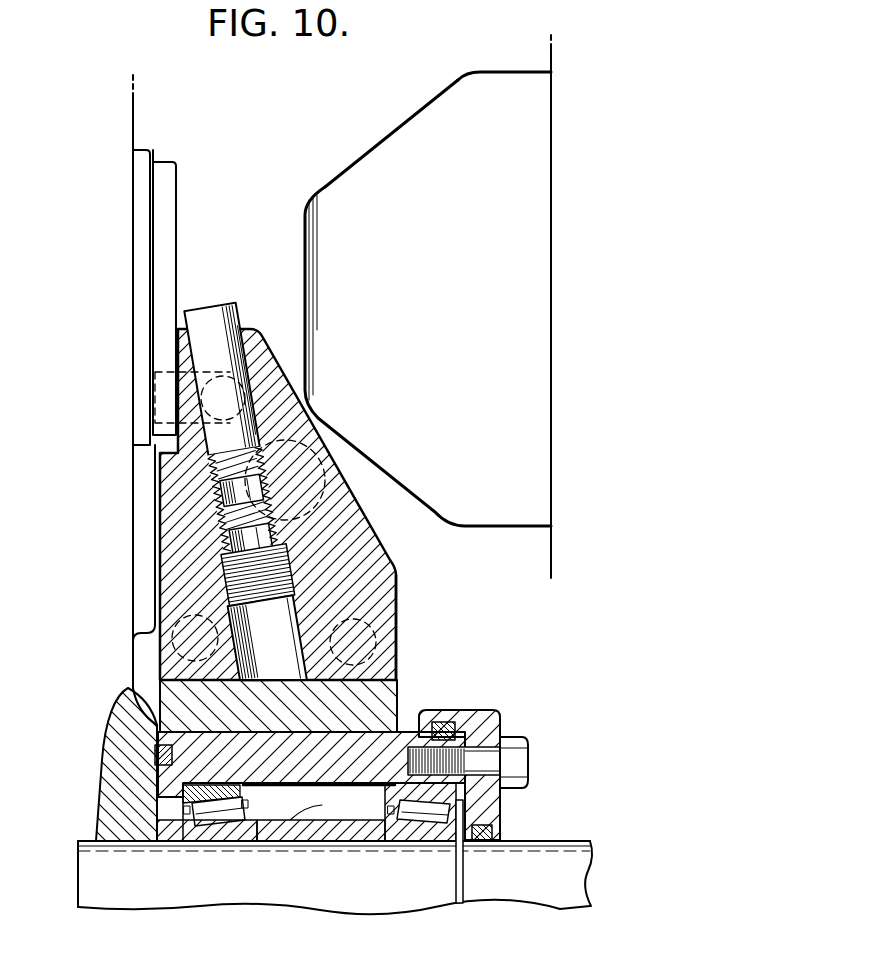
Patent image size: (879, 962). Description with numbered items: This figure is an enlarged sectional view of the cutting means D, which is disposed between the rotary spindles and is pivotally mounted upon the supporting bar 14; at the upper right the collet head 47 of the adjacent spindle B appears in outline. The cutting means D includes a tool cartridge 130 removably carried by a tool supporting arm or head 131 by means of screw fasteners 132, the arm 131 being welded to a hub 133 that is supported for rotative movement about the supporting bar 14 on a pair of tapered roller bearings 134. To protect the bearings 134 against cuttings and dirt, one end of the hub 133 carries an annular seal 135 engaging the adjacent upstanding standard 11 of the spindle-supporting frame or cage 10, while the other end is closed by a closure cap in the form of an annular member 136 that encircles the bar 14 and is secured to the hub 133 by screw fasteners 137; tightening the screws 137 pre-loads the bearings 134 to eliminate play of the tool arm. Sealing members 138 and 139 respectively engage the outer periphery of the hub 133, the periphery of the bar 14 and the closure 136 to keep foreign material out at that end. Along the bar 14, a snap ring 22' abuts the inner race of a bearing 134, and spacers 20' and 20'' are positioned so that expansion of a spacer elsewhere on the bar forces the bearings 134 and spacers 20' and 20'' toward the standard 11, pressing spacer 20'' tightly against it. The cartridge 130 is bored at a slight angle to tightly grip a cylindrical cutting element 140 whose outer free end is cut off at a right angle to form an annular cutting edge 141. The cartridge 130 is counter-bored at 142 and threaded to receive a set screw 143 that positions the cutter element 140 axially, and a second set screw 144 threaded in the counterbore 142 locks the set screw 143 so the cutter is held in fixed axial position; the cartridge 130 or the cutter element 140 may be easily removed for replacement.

The spindle B is at (437, 88).
The cutting means D is at (400, 582).
The collet head 47 is at (361, 165).
The spindle-supporting frame or cage 10 is at (94, 774).
The upstanding support or standard 11 is at (112, 716).
The supporting bar member 14 is at (566, 843).
The spacer 20' is at (321, 856).
The spacer 20'' is at (201, 843).
The snap ring 22' is at (446, 866).
The tool cartridge 130 is at (393, 607).
The tool supporting arm or head 131 is at (395, 684).
The screw fasteners 132 is at (378, 634).
The hub 133 is at (399, 727).
The tapered roller bearings 134 is at (319, 812).
The annular seal 135 is at (167, 745).
The closure cap 136 is at (502, 717).
The screw fasteners 137 is at (526, 762).
The sealing member 138 is at (455, 725).
The sealing member 139 is at (481, 838).
The cylindrical cutting element 140 is at (236, 318).
The annular cutting edge 141 is at (322, 471).
The counter bore 142 is at (278, 573).
The set screw 143 is at (263, 452).
The second set screw 144 is at (278, 519).